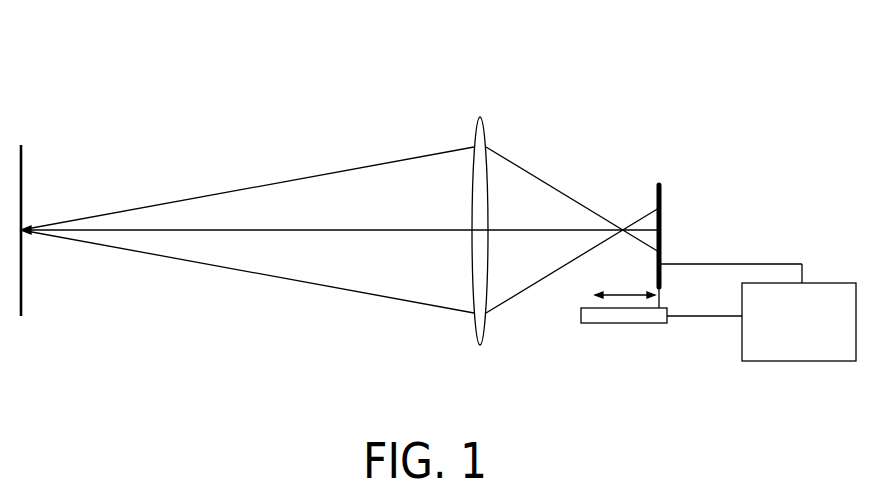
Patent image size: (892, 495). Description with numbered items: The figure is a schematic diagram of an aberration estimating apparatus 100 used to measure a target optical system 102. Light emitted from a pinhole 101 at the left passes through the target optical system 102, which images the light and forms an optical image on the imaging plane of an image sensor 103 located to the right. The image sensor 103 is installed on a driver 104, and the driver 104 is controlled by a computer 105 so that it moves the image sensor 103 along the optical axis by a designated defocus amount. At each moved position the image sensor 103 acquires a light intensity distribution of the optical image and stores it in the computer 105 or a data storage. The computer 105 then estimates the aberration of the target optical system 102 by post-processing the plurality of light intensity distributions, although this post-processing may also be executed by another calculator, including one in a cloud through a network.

The aberration estimating apparatus 100 is at (86, 34).
The pinhole 101 is at (20, 133).
The target optical system 102 is at (488, 104).
The image sensor 103 is at (664, 192).
The driver 104 is at (630, 326).
The computer 105 is at (842, 283).